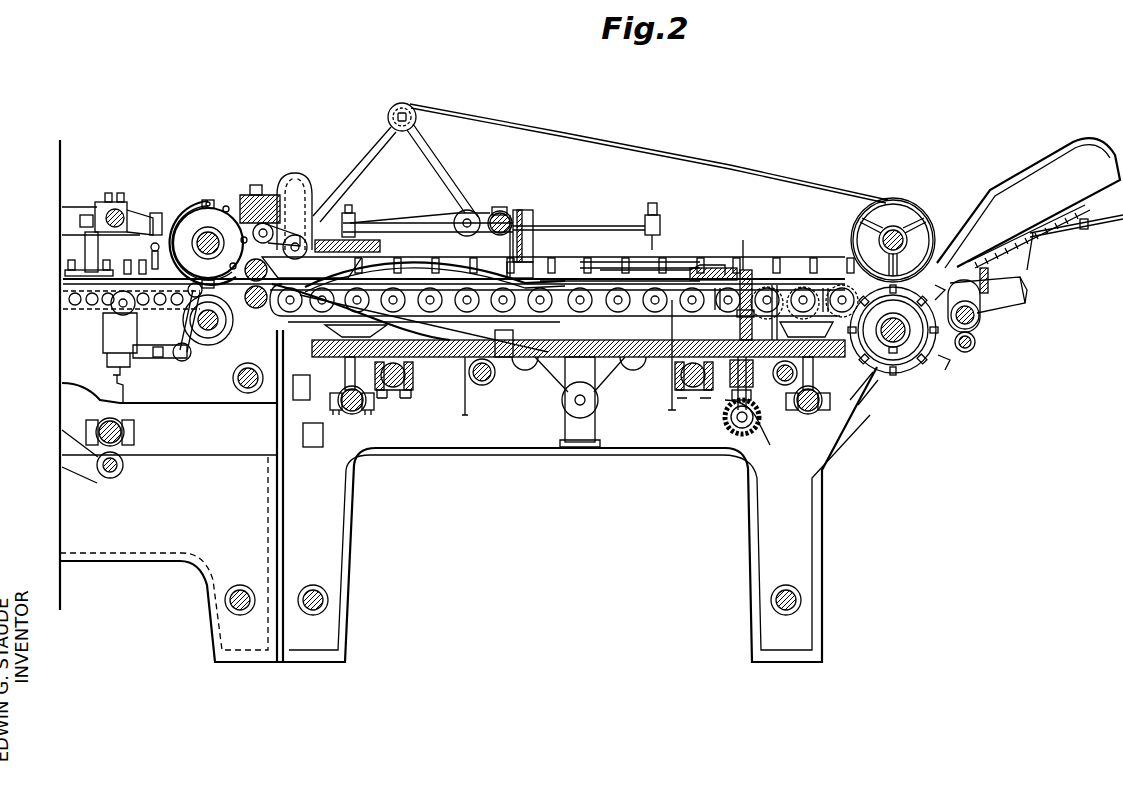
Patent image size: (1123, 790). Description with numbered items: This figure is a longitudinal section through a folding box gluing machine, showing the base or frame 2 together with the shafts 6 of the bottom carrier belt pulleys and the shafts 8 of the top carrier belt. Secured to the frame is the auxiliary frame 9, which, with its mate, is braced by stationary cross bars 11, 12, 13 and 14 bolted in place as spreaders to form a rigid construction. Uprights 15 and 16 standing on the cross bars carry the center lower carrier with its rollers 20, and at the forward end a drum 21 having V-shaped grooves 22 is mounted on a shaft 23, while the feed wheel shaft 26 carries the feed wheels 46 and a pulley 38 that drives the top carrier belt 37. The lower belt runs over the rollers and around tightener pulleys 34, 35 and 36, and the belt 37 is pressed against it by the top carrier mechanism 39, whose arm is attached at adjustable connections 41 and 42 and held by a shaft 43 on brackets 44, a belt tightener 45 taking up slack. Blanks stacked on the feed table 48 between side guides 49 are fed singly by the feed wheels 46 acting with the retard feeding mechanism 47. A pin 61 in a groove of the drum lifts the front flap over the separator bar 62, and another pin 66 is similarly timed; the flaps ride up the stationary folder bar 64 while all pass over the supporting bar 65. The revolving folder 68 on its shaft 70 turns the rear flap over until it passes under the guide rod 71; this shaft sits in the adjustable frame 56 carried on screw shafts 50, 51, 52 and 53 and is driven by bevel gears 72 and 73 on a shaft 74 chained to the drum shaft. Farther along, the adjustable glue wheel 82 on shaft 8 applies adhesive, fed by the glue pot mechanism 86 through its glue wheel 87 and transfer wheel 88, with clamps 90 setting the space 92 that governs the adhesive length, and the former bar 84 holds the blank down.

The base or frame 2 is at (152, 548).
The shafts 6 is at (210, 328).
The shafts 8 is at (214, 236).
The auxiliary frame 9 is at (332, 532).
The cross bar 11 is at (350, 413).
The cross bar 12 is at (809, 414).
The cross bar 13 is at (328, 600).
The cross bar 14 is at (771, 600).
The upright 15 is at (345, 378).
The upright 16 is at (820, 379).
The rollers 20 is at (455, 285).
The drum 21 is at (932, 355).
The V-shaped grooves 22 is at (870, 368).
The shaft 23 is at (905, 340).
The feed wheel shaft 26 is at (905, 230).
The tightener pulley 34 is at (522, 368).
The tightener pulley 35 is at (572, 412).
The tightener pulley 36 is at (634, 362).
The top carrier belt 37 is at (612, 140).
The pulley 38 is at (900, 228).
The top carrier mechanism 39 is at (600, 262).
The adjustable connection 41 is at (352, 212).
The adjustable connection 42 is at (655, 215).
The shaft 43 is at (503, 210).
The brackets 44 is at (532, 240).
The belt tightener 45 is at (423, 150).
The feed wheels 46 is at (878, 202).
The retard feeding mechanism 47 is at (985, 300).
The feed table 48 is at (1078, 200).
The side guides 49 is at (1035, 170).
The screw shaft 50 is at (394, 390).
The screw shaft 51 is at (481, 388).
The screw shaft 52 is at (695, 390).
The screw shaft 53 is at (784, 386).
The adjustable frame 56 is at (508, 360).
The pin 61 is at (843, 290).
The separator bar 62 is at (780, 290).
The stationary folder bar 64 is at (570, 285).
The supporting bar 65 is at (415, 262).
The pin 66 is at (935, 365).
The revolving folder 68 is at (712, 268).
The shaft 70 is at (752, 395).
The guide rod 71 is at (665, 268).
The bevel gear 72 is at (735, 425).
The bevel gear 73 is at (760, 450).
The shaft 74 is at (740, 435).
The adjustable glue wheel 82 is at (182, 207).
The former bar 84 is at (130, 277).
The glue pot mechanism 86 is at (330, 258).
The glue wheel 87 is at (305, 185).
The transfer wheel 88 is at (268, 195).
The clamps 90 is at (215, 228).
The space 92 is at (208, 200).